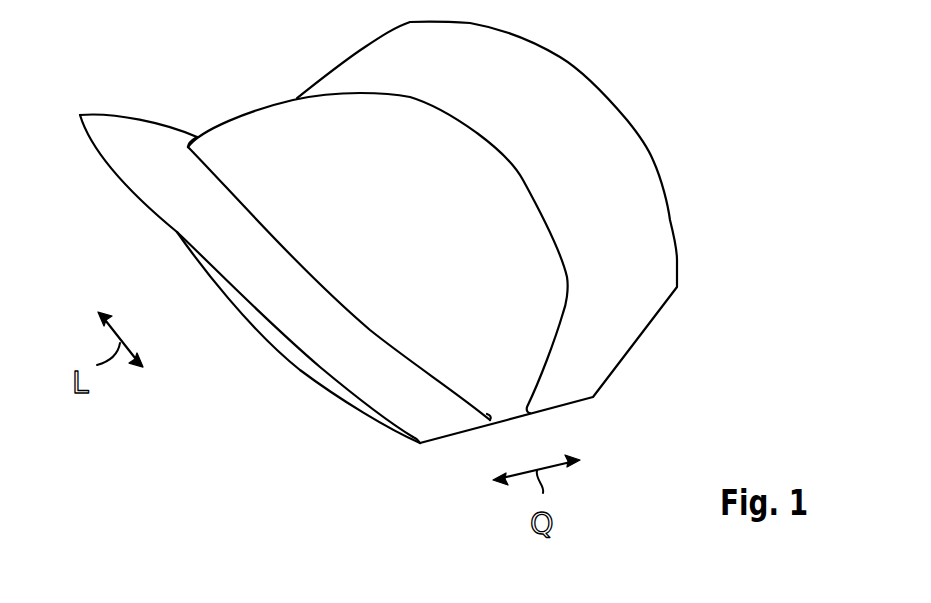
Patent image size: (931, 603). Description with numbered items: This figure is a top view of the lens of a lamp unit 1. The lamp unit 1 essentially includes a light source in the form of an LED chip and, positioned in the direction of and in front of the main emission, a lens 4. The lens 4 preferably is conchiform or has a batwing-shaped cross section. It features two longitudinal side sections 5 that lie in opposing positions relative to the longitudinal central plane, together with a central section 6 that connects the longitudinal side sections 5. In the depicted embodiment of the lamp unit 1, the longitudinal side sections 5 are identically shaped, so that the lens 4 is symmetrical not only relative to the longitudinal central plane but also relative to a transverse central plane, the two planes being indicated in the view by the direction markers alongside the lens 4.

The lamp unit 1 is at (416, 280).
The lens 4 is at (667, 350).
The longitudinal side sections 5 is at (172, 212).
The central section 6 is at (265, 135).